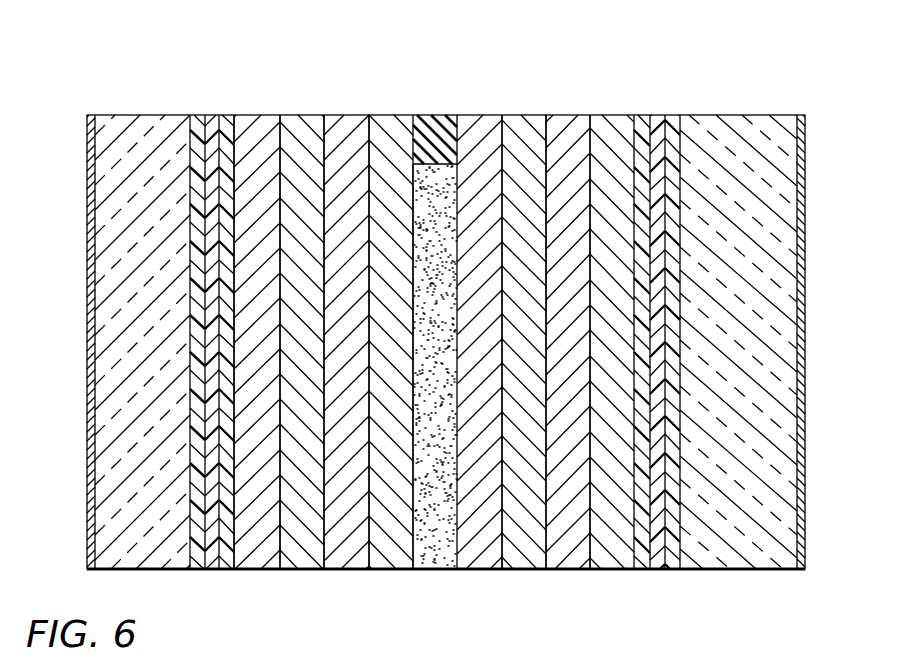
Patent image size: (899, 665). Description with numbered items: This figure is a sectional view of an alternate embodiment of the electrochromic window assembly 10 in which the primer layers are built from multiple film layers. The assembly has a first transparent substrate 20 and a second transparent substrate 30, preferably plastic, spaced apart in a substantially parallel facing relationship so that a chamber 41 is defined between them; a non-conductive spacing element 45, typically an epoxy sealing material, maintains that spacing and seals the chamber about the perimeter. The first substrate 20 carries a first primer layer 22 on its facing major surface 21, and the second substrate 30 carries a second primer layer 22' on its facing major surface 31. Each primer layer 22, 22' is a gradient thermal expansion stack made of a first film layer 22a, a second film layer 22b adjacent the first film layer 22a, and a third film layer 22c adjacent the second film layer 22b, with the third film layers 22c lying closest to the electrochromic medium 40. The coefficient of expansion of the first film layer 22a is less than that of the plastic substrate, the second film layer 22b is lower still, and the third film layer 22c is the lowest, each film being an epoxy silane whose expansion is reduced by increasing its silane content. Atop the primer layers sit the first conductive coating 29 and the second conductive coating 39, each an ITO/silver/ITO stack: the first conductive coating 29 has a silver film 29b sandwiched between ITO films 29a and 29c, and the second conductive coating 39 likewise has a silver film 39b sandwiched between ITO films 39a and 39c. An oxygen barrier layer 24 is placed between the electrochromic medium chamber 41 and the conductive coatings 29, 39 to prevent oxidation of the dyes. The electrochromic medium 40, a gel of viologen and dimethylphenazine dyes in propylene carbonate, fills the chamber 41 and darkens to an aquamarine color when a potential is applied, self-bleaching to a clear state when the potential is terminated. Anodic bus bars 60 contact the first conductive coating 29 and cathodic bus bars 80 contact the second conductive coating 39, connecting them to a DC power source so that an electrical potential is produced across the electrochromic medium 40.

The electrochromic window assembly 10 is at (792, 103).
The first transparent substrate 20 is at (100, 470).
The facing major surface 21 is at (152, 325).
The first primer layer 22 is at (204, 325).
The first film layer 22a is at (200, 115).
The second film layer 22b is at (208, 115).
The third film layer 22c is at (226, 115).
The second primer layer 22' is at (660, 320).
The oxygen barrier layer 24 is at (392, 558).
The first conductive coating 29 is at (323, 345).
The ITO film 29a is at (260, 551).
The silver film 29b is at (298, 551).
The ITO film 29c is at (345, 553).
The second transparent substrate 30 is at (776, 368).
The facing major surface 31 is at (725, 320).
The second conductive coating 39 is at (546, 346).
The ITO film 39a is at (608, 555).
The silver film 39b is at (570, 553).
The ITO film 39c is at (522, 558).
The electrochromic medium 40 is at (428, 563).
The chamber 41 is at (433, 187).
The spacing element 45 is at (432, 125).
The bus bars 60 is at (92, 330).
The bus bars 80 is at (806, 262).